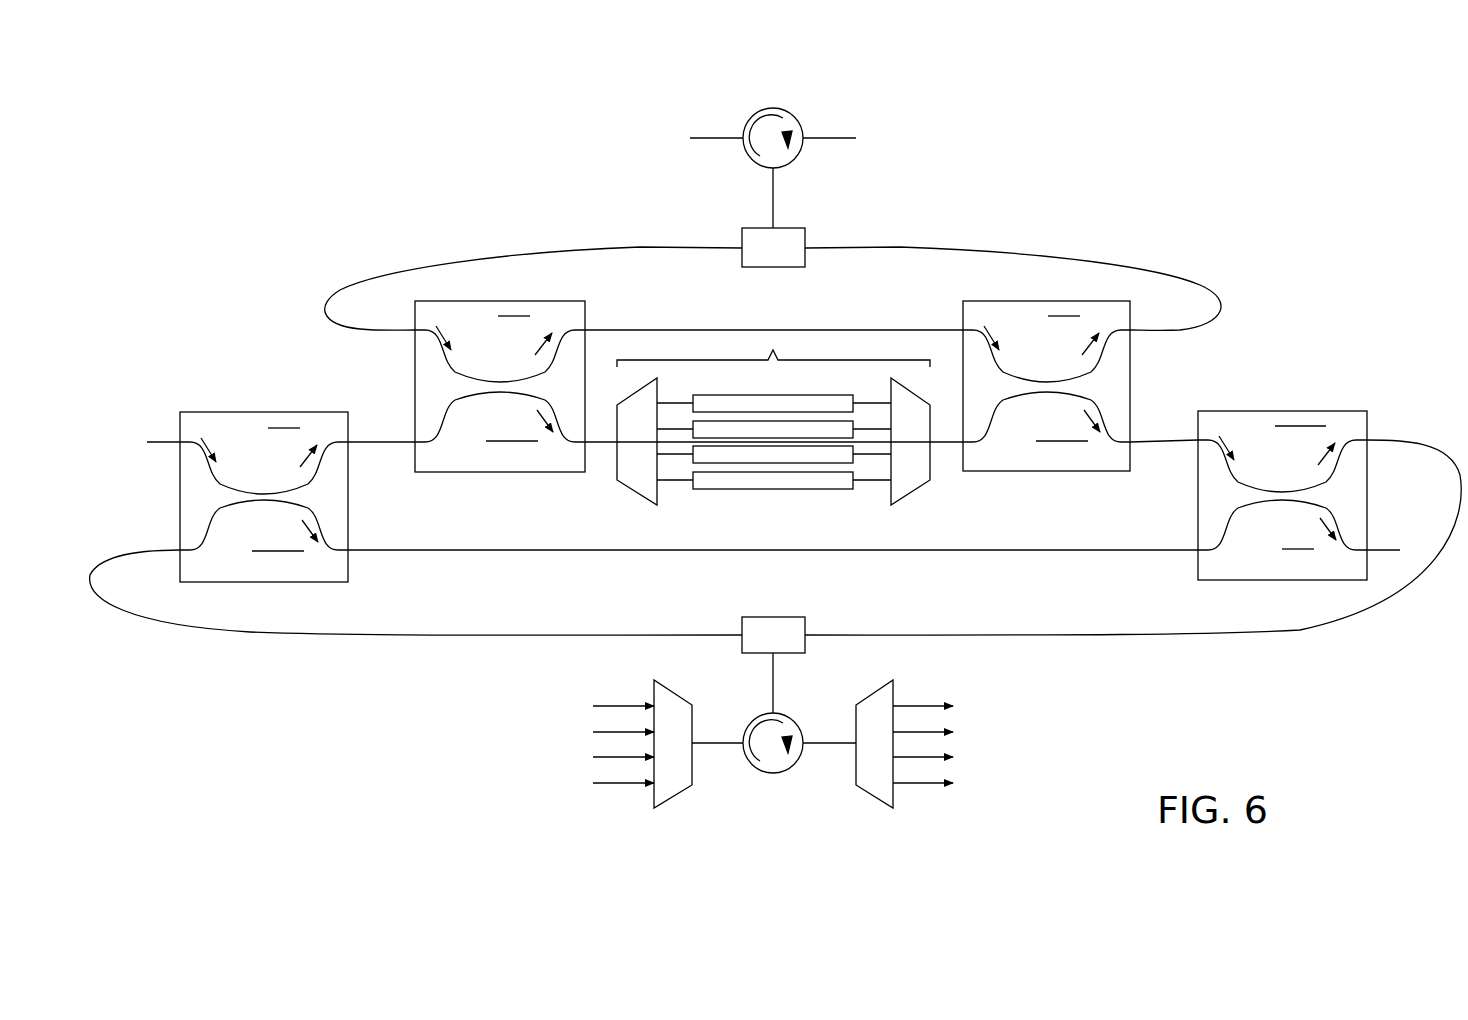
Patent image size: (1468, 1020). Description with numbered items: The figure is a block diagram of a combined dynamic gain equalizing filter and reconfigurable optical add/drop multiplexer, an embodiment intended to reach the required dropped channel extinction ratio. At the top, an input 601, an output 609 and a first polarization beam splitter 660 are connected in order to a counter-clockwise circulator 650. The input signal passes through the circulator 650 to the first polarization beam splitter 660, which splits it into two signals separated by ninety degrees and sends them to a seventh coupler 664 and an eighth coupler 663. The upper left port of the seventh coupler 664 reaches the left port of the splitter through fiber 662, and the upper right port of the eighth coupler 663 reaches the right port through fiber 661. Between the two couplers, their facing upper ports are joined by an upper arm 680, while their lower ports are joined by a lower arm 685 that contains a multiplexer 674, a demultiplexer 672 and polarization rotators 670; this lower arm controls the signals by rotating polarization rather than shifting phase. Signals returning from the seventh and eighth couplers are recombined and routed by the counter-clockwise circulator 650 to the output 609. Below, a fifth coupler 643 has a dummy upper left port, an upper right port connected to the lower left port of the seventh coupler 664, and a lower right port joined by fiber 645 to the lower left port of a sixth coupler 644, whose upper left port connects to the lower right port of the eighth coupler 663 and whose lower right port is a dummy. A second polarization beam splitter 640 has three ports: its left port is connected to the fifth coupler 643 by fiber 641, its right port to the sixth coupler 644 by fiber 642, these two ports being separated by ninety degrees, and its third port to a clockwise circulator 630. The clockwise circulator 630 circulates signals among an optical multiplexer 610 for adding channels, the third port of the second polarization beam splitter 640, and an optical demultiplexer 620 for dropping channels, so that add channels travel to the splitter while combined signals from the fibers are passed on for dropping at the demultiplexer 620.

The input 601 is at (666, 153).
The output 609 is at (880, 153).
The optical multiplexer 610 is at (680, 792).
The optical demultiplexer 620 is at (862, 792).
The clockwise circulator 630 is at (783, 773).
The second polarization beam splitter 640 is at (788, 617).
The fiber 641 is at (460, 635).
The fiber 642 is at (1048, 635).
The fifth coupler 643 is at (290, 412).
The sixth coupler 644 is at (1310, 411).
The fiber 645 is at (476, 550).
The counter-clockwise circulator 650 is at (795, 112).
The first polarization beam splitter 660 is at (788, 228).
The fiber 661 is at (1008, 243).
The fiber 662 is at (572, 243).
The eighth coupler 663 is at (1025, 301).
The seventh coupler 664 is at (520, 301).
The polarization rotators 670 is at (797, 489).
The left wavelength demultiplexer 672 is at (622, 483).
The multiplexer 674 is at (908, 483).
The upper arm 680 is at (788, 330).
The lower arm 685 is at (600, 440).